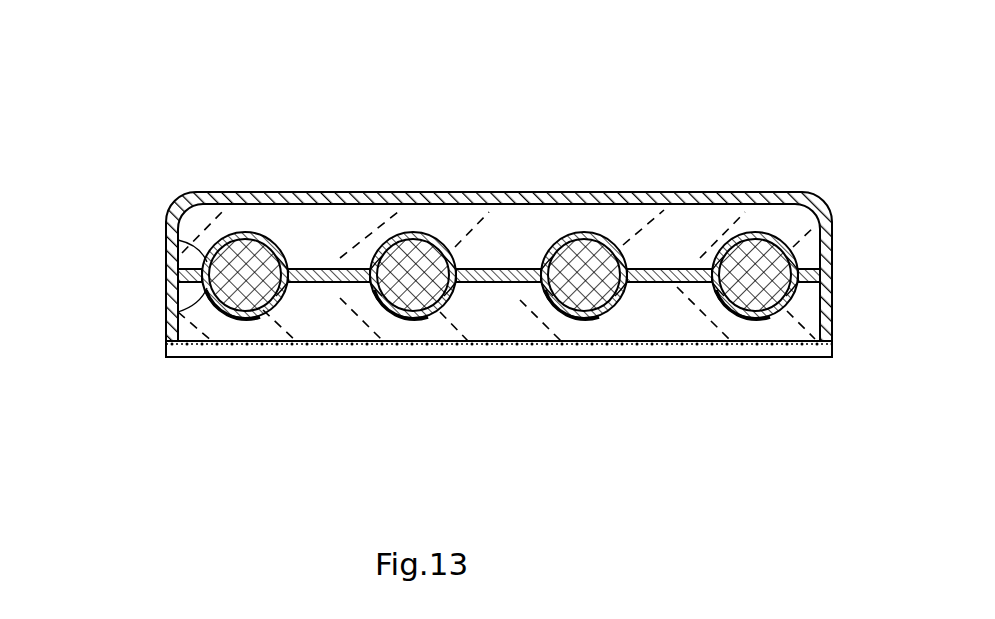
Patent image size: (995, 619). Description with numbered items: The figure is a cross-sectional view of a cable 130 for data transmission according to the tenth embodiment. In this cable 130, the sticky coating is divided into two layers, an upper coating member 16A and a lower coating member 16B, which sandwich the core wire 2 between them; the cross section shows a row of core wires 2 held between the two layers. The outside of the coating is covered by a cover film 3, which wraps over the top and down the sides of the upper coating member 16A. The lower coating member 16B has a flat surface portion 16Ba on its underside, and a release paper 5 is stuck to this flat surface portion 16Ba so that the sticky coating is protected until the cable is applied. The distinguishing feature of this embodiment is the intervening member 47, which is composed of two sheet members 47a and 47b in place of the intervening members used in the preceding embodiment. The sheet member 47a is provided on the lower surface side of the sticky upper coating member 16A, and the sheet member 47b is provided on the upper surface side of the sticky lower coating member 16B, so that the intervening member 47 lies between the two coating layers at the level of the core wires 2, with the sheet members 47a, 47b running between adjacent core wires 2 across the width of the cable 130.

The cable 130 is at (625, 119).
The core wire 2 is at (257, 233).
The cover film 3 is at (503, 192).
The release paper 5 is at (206, 351).
The upper coating member 16A is at (672, 245).
The lower coating member 16B is at (667, 305).
The flat surface portion 16Ba is at (775, 349).
The intervening member 47 is at (78, 212).
The sheet member 47a is at (166, 240).
The sheet member 47b is at (172, 278).